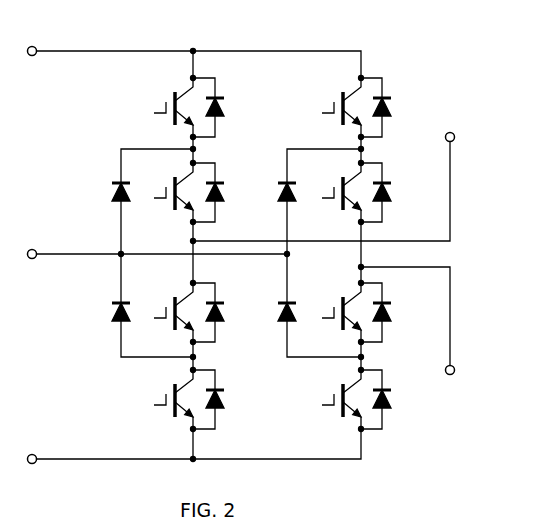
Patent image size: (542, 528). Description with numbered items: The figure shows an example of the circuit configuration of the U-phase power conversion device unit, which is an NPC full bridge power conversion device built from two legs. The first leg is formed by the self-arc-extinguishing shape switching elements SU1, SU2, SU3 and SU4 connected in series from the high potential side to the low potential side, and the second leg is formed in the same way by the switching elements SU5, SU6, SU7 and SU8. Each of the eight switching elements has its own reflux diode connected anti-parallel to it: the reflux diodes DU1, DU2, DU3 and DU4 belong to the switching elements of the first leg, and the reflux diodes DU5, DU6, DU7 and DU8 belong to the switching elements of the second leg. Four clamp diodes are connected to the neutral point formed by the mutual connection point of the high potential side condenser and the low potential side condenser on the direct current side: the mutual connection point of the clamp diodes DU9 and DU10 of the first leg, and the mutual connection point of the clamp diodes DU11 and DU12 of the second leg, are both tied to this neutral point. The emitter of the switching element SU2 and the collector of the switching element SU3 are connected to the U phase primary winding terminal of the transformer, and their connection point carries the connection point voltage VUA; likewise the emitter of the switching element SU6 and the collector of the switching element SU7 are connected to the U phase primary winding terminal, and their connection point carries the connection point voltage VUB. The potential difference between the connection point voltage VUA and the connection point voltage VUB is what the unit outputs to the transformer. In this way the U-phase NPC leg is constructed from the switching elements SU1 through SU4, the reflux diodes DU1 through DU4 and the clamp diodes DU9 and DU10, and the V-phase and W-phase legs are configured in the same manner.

The self-arc-extinguishing shape switching element SU1 is at (162, 106).
The self-arc-extinguishing shape switching element SU2 is at (166, 192).
The self-arc-extinguishing shape switching element SU3 is at (164, 315).
The self-arc-extinguishing shape switching element SU4 is at (154, 404).
The self-arc-extinguishing shape switching element SU5 is at (330, 106).
The self-arc-extinguishing shape switching element SU6 is at (332, 192).
The self-arc-extinguishing shape switching element SU7 is at (331, 315).
The self-arc-extinguishing shape switching element SU8 is at (319, 404).
The reflux diode DU1 is at (221, 112).
The reflux diode DU2 is at (221, 197).
The reflux diode DU3 is at (221, 317).
The reflux diode DU4 is at (221, 404).
The reflux diode DU5 is at (388, 112).
The reflux diode DU6 is at (388, 197).
The reflux diode DU7 is at (388, 317).
The reflux diode DU8 is at (388, 404).
The clamp diode DU9 is at (128, 197).
The clamp diode DU10 is at (128, 317).
The clamp diode DU11 is at (294, 197).
The clamp diode DU12 is at (294, 317).
The connection point voltage VUA is at (468, 139).
The connection point voltage VUB is at (468, 371).